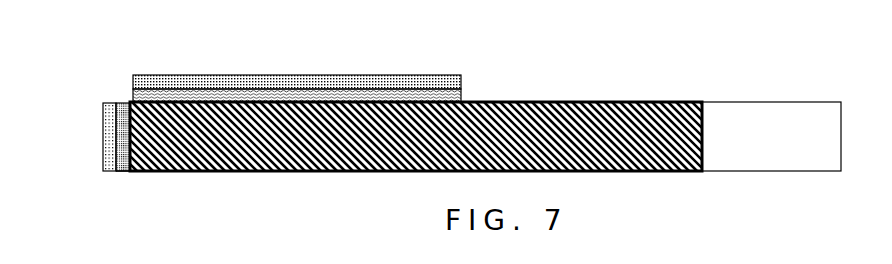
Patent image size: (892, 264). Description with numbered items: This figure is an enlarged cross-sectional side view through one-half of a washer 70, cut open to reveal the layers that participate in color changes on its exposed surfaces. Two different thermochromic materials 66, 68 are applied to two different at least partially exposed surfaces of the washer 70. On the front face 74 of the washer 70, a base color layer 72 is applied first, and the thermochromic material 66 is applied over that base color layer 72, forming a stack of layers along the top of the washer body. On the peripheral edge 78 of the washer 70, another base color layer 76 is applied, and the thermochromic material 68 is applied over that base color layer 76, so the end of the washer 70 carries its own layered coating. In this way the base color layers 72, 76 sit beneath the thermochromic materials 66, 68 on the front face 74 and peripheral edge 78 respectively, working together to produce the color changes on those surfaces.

The thermochromic material 66 is at (391, 75).
The thermochromic material 68 is at (103, 131).
The washer 70 is at (731, 100).
The base color layer 72 is at (462, 98).
The front face 74 is at (599, 101).
The base color layer 76 is at (122, 172).
The peripheral edge 78 is at (118, 147).